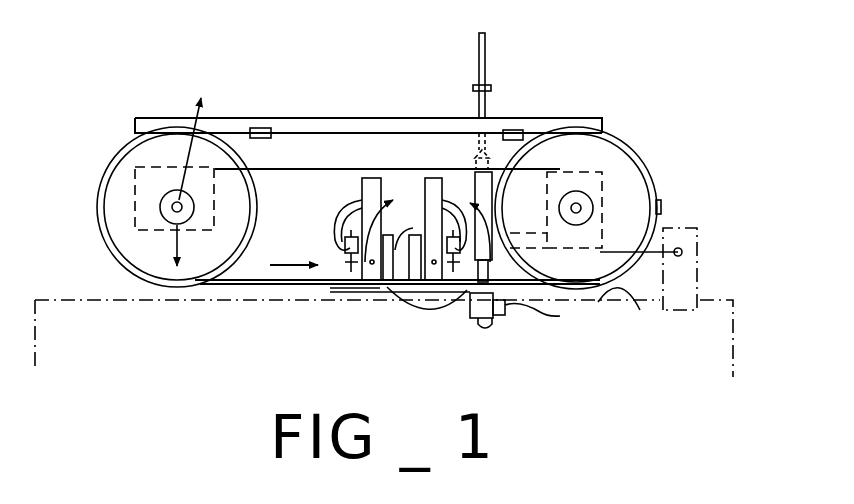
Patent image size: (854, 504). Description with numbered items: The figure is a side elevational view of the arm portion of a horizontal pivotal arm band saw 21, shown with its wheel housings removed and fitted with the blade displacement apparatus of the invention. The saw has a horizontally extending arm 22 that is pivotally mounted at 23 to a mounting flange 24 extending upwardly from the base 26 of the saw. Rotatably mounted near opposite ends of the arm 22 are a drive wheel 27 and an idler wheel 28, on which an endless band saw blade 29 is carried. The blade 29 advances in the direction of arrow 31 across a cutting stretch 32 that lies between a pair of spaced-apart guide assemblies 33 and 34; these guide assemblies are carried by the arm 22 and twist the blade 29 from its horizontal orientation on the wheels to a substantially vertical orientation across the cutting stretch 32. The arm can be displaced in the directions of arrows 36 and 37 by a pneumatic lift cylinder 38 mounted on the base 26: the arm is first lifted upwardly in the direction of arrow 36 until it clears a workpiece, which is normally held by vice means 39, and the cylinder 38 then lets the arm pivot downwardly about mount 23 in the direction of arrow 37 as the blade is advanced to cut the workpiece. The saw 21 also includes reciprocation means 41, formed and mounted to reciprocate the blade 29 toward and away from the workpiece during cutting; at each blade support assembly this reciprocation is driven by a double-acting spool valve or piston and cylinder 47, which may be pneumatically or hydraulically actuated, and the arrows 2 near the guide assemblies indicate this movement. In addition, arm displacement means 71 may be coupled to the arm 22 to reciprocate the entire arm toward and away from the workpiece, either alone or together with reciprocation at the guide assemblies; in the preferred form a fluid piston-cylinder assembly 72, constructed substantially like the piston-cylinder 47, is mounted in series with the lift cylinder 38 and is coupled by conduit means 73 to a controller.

The direction arrows 2 is at (427, 220).
The band saw 21 is at (572, 103).
The horizontally extending arm 22 is at (135, 125).
The pivotal mount 23 is at (690, 228).
The mounting flange 24 is at (700, 280).
The base 26 is at (640, 318).
The drive wheel 27 is at (646, 175).
The idler wheel 28 is at (258, 207).
The band saw blade 29 is at (292, 133).
The arrow 31 is at (290, 282).
The cutting stretch 32 is at (416, 305).
The guide assembly 33 is at (371, 172).
The guide assembly 34 is at (438, 172).
The arrow 36 is at (183, 152).
The arrow 37 is at (182, 235).
The pneumatic lift cylinder 38 is at (503, 177).
The vice means 39 is at (393, 290).
The reciprocation means 41 is at (354, 270).
The piston and cylinder 47 is at (340, 247).
The arm displacement means 71 is at (500, 330).
The fluid piston-cylinder assembly 72 is at (477, 317).
The conduit means 73 is at (515, 304).